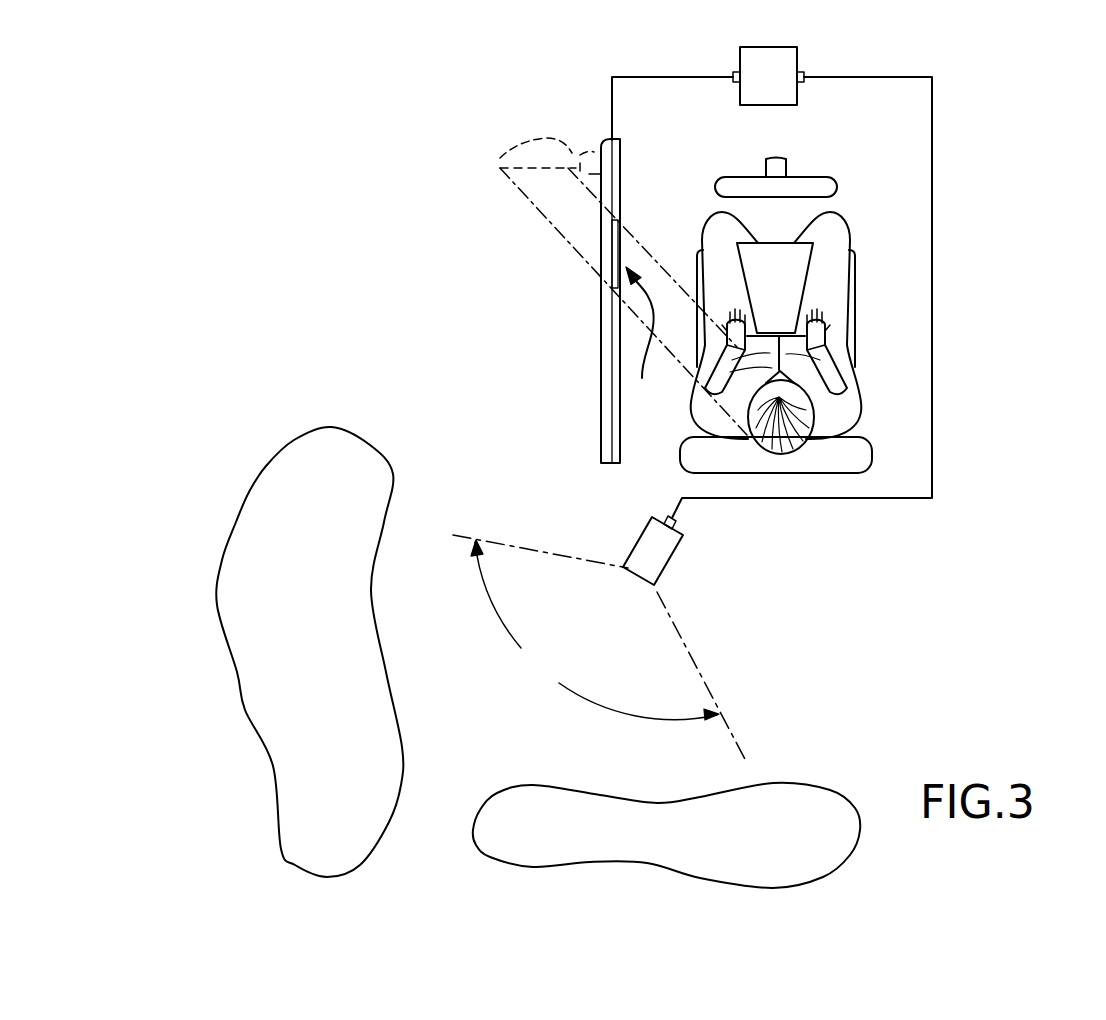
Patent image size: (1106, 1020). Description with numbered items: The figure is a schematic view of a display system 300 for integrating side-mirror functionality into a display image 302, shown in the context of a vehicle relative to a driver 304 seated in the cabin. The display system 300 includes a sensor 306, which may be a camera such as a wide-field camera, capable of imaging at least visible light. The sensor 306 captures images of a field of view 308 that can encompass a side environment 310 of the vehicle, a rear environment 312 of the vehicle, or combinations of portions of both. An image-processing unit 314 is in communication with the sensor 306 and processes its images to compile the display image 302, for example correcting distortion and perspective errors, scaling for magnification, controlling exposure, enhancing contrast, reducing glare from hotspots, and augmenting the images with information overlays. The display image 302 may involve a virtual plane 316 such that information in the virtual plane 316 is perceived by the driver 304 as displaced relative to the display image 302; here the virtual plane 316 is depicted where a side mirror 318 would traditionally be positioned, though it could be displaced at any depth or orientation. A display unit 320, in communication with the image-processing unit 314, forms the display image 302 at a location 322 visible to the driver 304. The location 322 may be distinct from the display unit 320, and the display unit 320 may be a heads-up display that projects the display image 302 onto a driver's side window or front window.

The display system 300 is at (993, 104).
The display image 302 is at (618, 233).
The driver 304 is at (860, 404).
The sensor 306 is at (672, 565).
The field of view 308 is at (600, 649).
The side environment 310 is at (327, 676).
The rear environment 312 is at (690, 849).
The image-processing unit 314 is at (783, 47).
The virtual plane 316 is at (522, 172).
The side mirror 318 is at (543, 140).
The display unit 320 is at (618, 290).
The location 322 is at (644, 338).